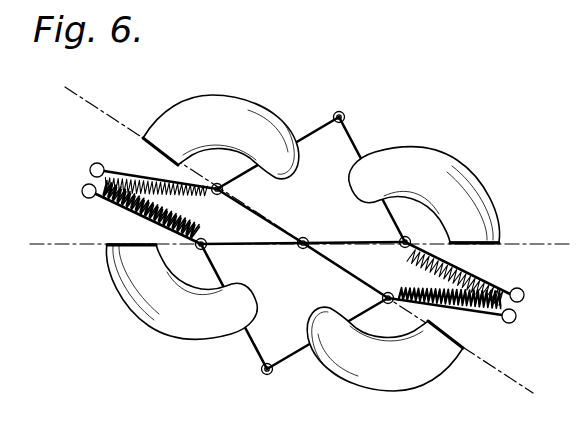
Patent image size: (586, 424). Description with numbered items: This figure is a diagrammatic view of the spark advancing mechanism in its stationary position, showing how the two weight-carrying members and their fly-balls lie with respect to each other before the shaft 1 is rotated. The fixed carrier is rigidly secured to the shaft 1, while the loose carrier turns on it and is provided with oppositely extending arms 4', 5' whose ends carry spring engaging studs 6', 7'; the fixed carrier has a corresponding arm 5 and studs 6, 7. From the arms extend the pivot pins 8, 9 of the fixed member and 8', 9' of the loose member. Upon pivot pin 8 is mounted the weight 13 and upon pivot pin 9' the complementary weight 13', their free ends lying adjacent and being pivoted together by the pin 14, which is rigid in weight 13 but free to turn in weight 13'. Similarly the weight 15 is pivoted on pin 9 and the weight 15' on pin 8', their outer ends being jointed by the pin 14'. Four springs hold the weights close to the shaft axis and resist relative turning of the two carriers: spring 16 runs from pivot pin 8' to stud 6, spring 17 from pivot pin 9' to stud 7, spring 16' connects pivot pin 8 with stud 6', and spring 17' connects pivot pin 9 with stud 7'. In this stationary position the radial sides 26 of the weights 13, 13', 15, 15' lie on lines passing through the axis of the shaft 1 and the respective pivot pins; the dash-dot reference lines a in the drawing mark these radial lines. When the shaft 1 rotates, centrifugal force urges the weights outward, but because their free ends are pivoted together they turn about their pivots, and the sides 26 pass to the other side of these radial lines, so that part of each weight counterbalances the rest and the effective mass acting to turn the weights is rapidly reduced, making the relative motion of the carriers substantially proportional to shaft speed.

The shaft 1 is at (304, 237).
The arm 4' is at (193, 210).
The arm 5 is at (406, 292).
The arm 5' is at (354, 228).
The stud 6 is at (97, 159).
The stud 6' is at (72, 196).
The stud 7 is at (521, 320).
The stud 7' is at (534, 289).
The pivot pin 8 is at (217, 175).
The pivot pin 8' is at (218, 236).
The pivot pin 9 is at (388, 284).
The pivot pin 9' is at (414, 230).
The weight 13 is at (221, 123).
The weight 13' is at (424, 181).
The pin 14 is at (352, 102).
The pin 14' is at (270, 385).
The weight 15 is at (385, 360).
The weight 15' is at (181, 305).
The spring 16 is at (151, 212).
The spring 16' is at (165, 203).
The spring 17 is at (455, 276).
The spring 17' is at (441, 312).
The side 26 is at (176, 160).
The axis line a is at (300, 236).